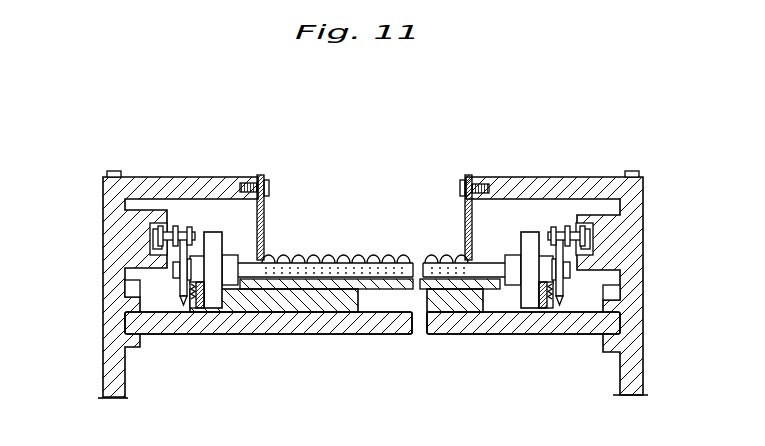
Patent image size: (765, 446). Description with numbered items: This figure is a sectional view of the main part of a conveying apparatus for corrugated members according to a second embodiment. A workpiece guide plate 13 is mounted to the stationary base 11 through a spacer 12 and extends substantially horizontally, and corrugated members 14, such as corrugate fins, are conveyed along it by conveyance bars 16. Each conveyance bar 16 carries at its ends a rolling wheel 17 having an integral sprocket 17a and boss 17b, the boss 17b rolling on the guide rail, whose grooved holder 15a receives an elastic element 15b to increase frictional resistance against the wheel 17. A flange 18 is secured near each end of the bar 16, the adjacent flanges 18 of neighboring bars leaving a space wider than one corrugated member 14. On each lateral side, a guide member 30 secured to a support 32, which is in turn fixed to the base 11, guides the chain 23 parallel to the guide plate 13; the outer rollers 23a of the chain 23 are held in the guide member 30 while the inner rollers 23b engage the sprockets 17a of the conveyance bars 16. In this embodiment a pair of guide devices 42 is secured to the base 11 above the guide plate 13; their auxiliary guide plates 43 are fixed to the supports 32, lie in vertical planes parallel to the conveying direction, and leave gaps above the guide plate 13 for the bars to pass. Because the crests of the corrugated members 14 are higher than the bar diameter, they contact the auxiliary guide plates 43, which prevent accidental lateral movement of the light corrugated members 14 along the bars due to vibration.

The stationary base 11 is at (308, 328).
The spacer 12 is at (355, 303).
The workpiece guide plate 13 is at (399, 291).
The corrugated member 14 is at (344, 258).
The grooved holder 15a is at (193, 300).
The elastic element 15b is at (224, 289).
The conveyance bar 16 is at (406, 266).
The rolling wheel 17 is at (170, 296).
The sprocket 17a is at (185, 306).
The boss 17b is at (200, 260).
The flange 18 is at (213, 303).
The chain 23 is at (174, 218).
The outer roller 23a is at (161, 222).
The inner roller 23b is at (187, 232).
The guide member 30 is at (118, 226).
The support 32 is at (108, 297).
The guide device 42 is at (264, 179).
The auxiliary guide plate 43 is at (263, 222).